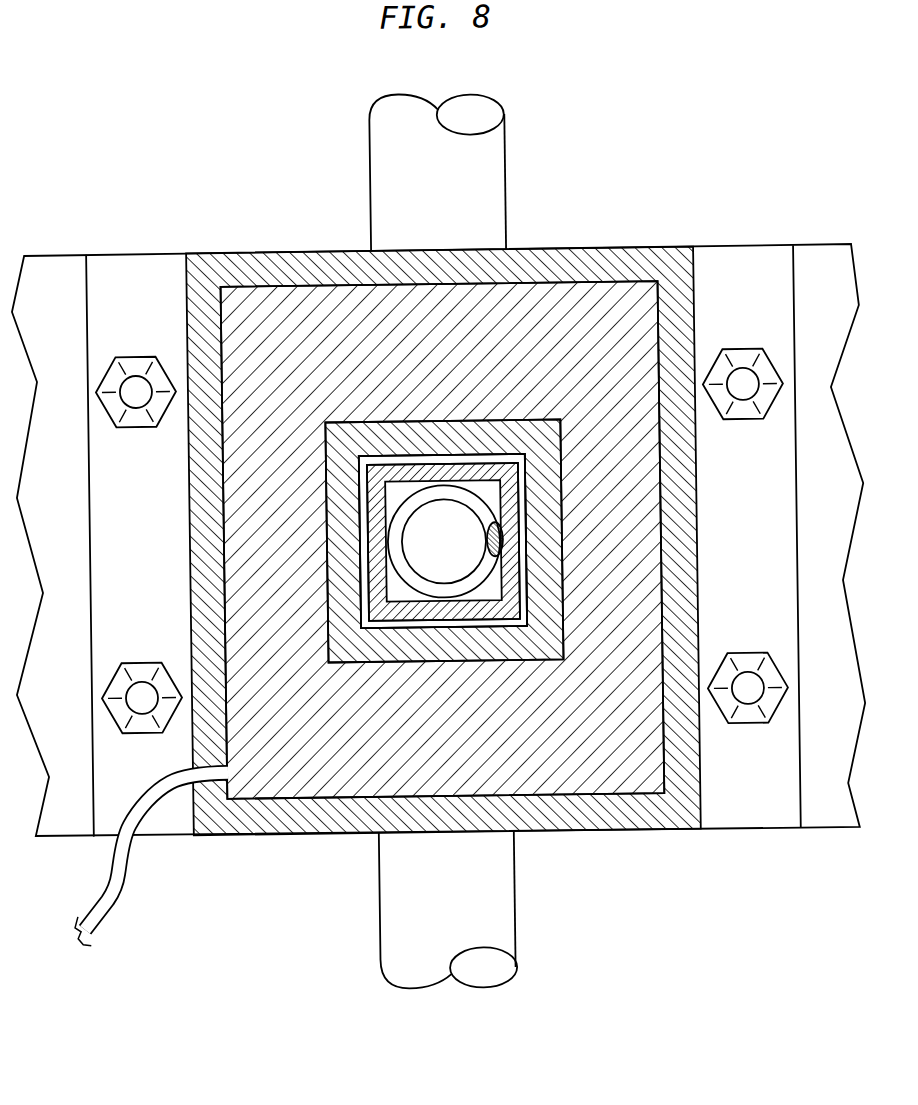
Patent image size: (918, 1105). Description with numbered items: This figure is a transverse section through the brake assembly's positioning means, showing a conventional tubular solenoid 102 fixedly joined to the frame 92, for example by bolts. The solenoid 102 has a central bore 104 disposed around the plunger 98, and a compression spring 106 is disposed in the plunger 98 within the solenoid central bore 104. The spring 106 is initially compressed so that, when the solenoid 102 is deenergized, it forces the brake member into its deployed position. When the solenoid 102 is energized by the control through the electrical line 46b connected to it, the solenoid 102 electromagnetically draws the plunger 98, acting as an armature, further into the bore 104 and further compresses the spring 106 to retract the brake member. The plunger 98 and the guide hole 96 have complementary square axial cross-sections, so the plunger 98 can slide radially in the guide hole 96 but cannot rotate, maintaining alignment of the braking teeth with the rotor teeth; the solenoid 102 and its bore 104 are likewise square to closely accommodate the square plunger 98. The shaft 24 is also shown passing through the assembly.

The shaft 24 is at (510, 178).
The frame 92 is at (52, 266).
The guide hole 96 is at (527, 519).
The plunger 98 is at (393, 469).
The tubular solenoid 102 is at (305, 832).
The central bore 104 is at (457, 624).
The compression spring 106 is at (467, 489).
The electrical line 46b is at (123, 878).